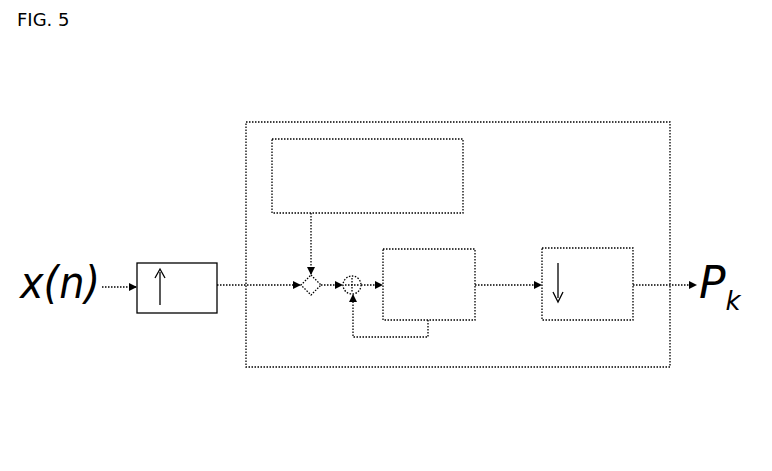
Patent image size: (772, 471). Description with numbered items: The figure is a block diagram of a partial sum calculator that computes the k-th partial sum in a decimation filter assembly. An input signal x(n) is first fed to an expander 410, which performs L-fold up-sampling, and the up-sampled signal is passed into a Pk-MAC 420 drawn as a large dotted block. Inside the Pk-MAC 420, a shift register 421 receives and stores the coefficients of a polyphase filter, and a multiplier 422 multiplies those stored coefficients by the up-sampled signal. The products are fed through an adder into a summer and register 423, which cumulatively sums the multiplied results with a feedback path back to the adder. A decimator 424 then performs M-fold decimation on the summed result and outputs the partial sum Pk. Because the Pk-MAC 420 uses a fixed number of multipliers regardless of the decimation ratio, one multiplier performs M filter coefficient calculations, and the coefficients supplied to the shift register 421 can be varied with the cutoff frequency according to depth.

The expander 410 is at (165, 263).
The Pk-MAC 420 is at (480, 122).
The shift register 421 is at (332, 139).
The multiplier 422 is at (313, 297).
The summer and register 423 is at (465, 320).
The decimator 424 is at (605, 320).